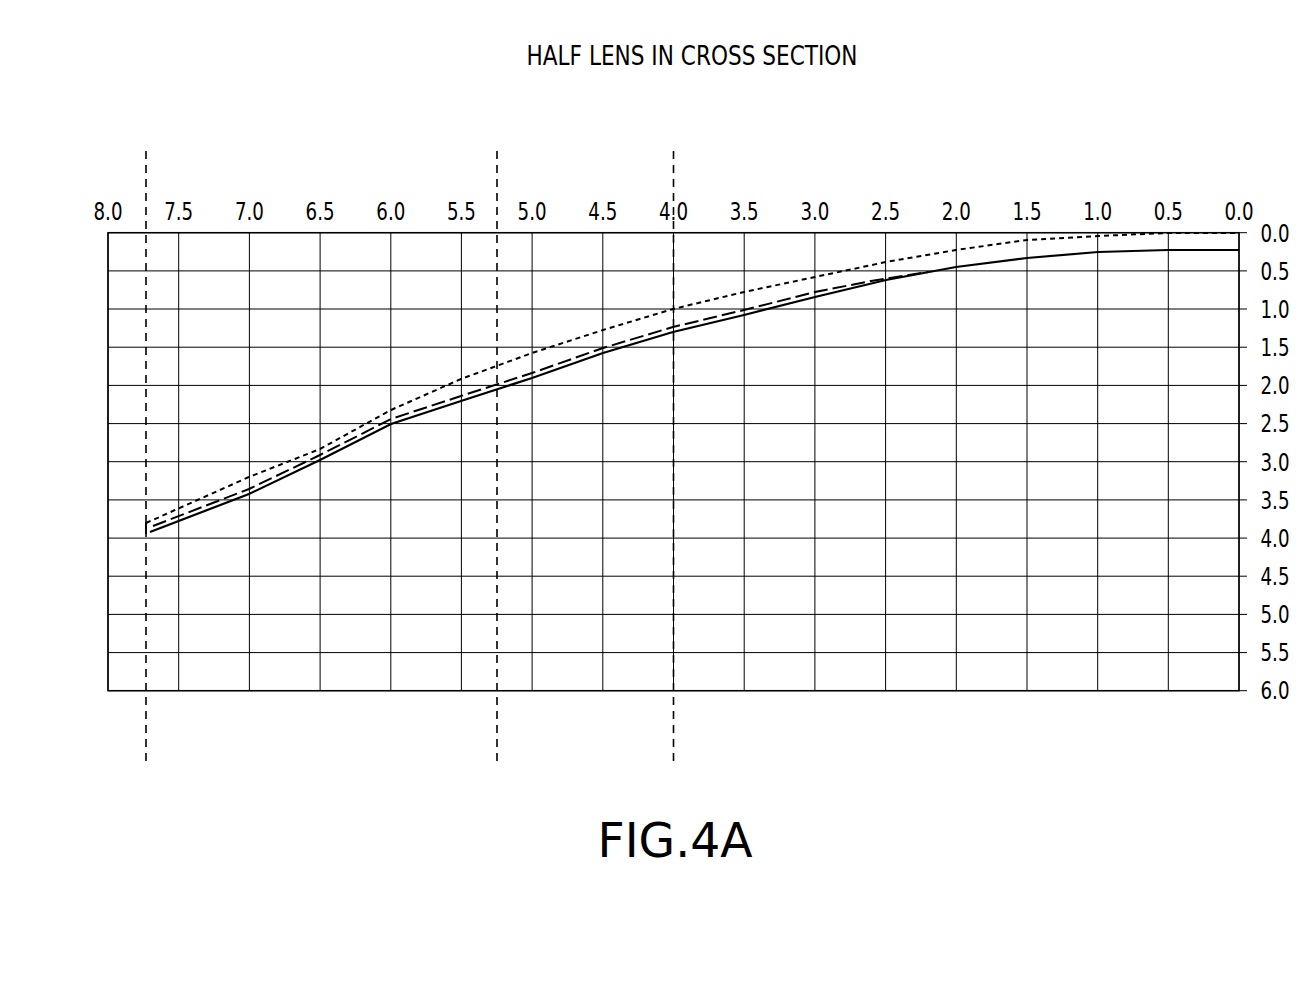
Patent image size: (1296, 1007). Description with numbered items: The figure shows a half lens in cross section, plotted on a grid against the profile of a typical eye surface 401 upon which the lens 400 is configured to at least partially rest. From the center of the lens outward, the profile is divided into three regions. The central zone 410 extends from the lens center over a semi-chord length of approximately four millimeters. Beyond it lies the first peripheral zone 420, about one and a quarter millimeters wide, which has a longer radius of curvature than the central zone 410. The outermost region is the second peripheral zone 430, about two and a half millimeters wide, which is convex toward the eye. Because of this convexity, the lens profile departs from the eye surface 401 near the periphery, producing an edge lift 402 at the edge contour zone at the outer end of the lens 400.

The lens 400 is at (982, 255).
The eye surface 401 is at (525, 383).
The edge lift 402 is at (138, 532).
The central zone 410 is at (852, 255).
The first peripheral zone 420 is at (633, 297).
The second peripheral zone 430 is at (330, 431).